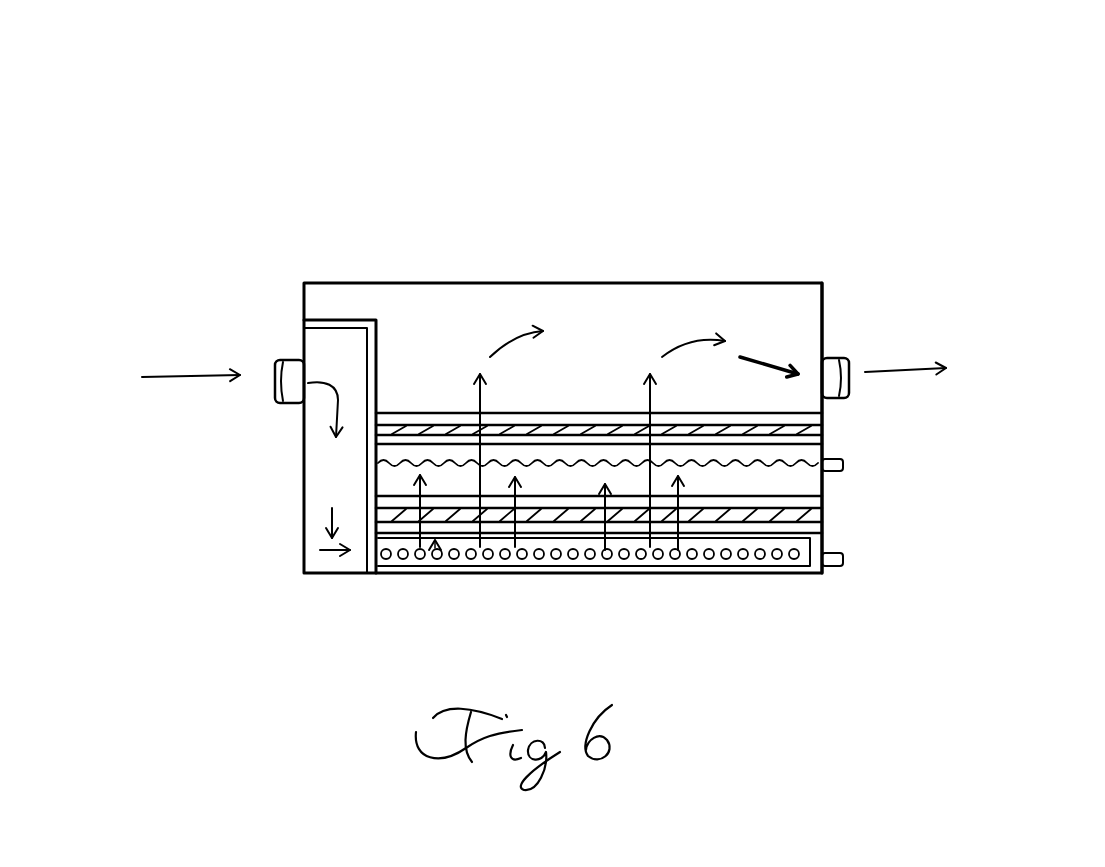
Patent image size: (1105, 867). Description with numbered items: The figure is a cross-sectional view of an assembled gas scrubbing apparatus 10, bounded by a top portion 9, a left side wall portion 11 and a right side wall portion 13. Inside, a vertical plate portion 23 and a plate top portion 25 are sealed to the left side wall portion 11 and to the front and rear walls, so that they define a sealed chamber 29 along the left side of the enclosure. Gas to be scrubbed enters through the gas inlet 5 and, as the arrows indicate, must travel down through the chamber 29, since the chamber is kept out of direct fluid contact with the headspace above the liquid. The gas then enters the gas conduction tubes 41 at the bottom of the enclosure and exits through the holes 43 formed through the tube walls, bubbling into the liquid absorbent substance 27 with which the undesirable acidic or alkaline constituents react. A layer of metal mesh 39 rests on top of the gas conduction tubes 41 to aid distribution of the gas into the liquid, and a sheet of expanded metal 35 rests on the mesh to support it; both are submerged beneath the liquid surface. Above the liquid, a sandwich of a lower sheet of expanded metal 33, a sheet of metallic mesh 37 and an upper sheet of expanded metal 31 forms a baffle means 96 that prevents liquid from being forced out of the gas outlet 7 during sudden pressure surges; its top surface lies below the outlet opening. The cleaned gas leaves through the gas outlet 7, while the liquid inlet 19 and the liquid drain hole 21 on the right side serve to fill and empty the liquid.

The gas inlet 5 is at (294, 380).
The gas outlet 7 is at (848, 360).
The top portion 9 is at (727, 283).
The gas scrubbing apparatus 10 is at (672, 152).
The left side wall portion 11 is at (600, 330).
The right side wall portion 13 is at (830, 300).
The liquid inlet 19 is at (843, 468).
The liquid drain hole 21 is at (843, 563).
The plate portion 23 is at (378, 323).
The plate top portion 25 is at (339, 324).
The liquid absorbent substance 27 is at (395, 478).
The sealed chamber 29 is at (338, 489).
The sheet of expanded metal 31 is at (823, 418).
The sheet of expanded metal 33 is at (823, 438).
The sheet of expanded metal 35 is at (823, 502).
The sheet of metallic mesh 37 is at (823, 430).
The layer of metal mesh 39 is at (825, 517).
The gas conduction tubes 41 is at (775, 553).
The holes 43 is at (518, 562).
The baffle means 96 is at (606, 410).